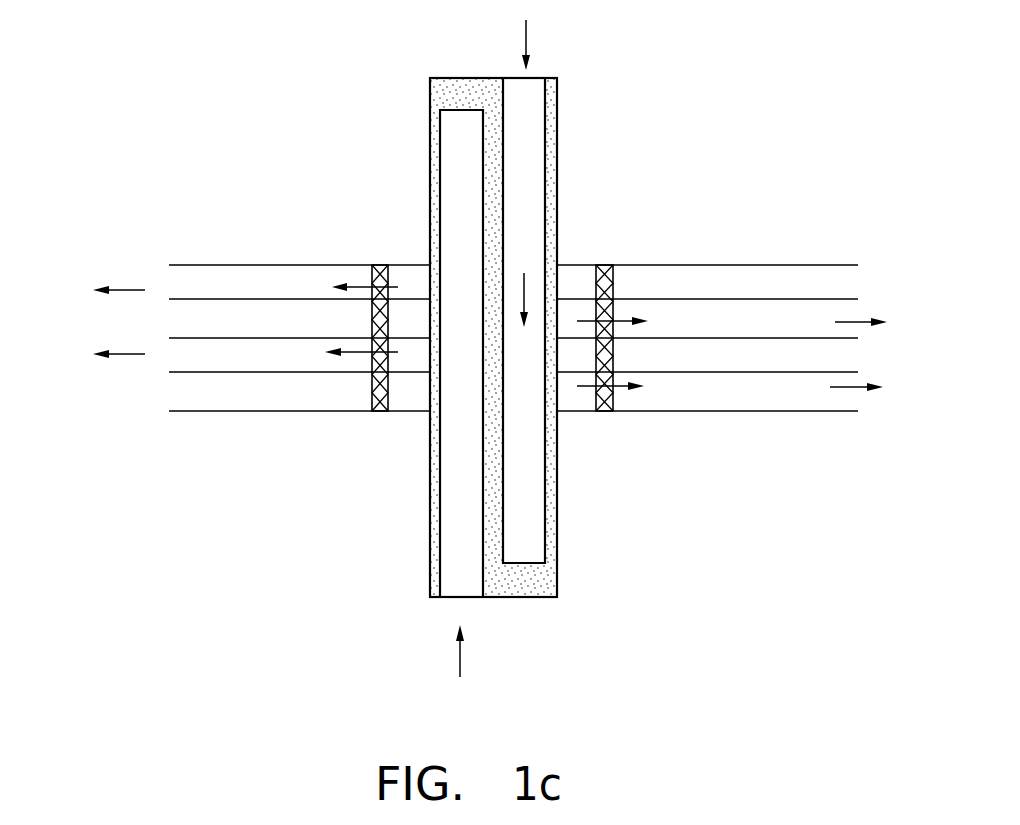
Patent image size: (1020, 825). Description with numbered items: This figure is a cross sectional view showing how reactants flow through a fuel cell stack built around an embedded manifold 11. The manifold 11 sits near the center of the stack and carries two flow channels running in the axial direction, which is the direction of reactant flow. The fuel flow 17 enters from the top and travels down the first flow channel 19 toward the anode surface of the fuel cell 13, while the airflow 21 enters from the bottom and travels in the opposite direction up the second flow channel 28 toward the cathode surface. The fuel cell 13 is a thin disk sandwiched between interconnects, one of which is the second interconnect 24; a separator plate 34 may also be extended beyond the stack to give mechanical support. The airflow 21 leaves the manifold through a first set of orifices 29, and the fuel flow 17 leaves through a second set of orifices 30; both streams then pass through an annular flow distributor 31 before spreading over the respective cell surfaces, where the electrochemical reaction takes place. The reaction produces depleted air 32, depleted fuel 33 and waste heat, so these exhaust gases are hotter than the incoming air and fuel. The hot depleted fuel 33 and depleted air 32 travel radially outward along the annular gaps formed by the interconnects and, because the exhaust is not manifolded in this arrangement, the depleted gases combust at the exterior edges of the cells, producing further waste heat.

The embedded manifold 11 is at (430, 133).
The fuel cell 13 is at (193, 373).
The fuel flow 17 is at (528, 33).
The first flow channel 19 is at (533, 133).
The airflow 21 is at (460, 677).
The second interconnect 24 is at (183, 338).
The second flow channel 28 is at (452, 473).
The first set of orifices 29 is at (415, 352).
The second set of orifices 30 is at (566, 315).
The annular flow distributor 31 is at (368, 284).
The depleted air 32 is at (131, 290).
The depleted fuel 33 is at (847, 322).
The separator plate 34 is at (183, 338).